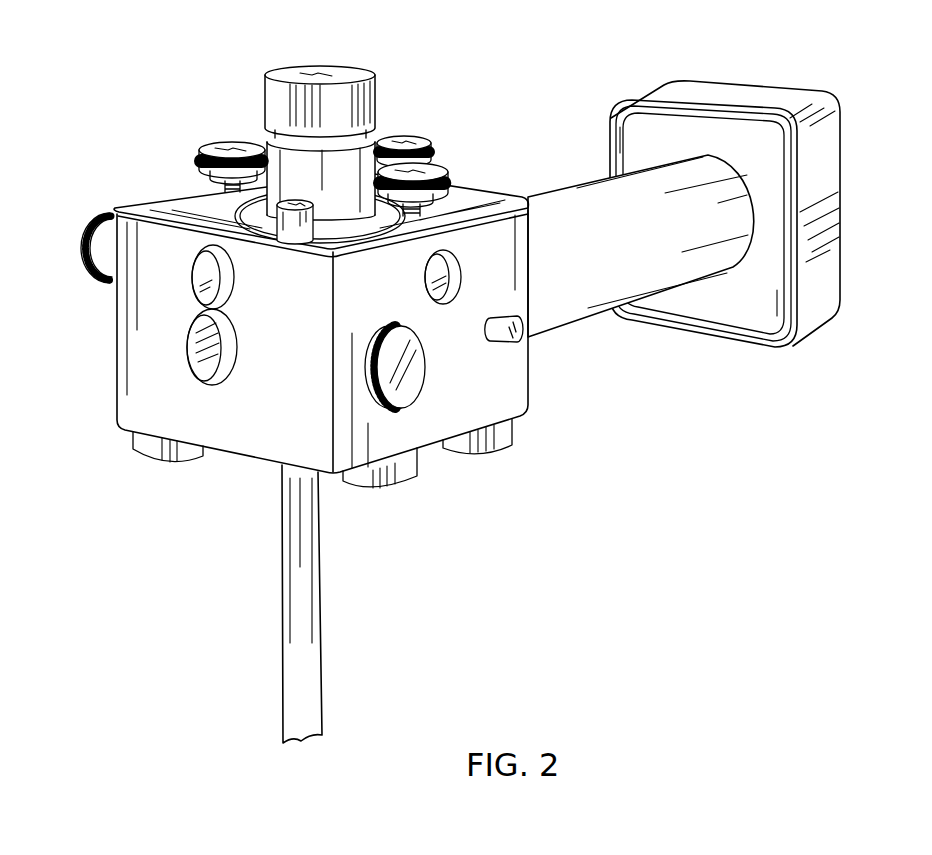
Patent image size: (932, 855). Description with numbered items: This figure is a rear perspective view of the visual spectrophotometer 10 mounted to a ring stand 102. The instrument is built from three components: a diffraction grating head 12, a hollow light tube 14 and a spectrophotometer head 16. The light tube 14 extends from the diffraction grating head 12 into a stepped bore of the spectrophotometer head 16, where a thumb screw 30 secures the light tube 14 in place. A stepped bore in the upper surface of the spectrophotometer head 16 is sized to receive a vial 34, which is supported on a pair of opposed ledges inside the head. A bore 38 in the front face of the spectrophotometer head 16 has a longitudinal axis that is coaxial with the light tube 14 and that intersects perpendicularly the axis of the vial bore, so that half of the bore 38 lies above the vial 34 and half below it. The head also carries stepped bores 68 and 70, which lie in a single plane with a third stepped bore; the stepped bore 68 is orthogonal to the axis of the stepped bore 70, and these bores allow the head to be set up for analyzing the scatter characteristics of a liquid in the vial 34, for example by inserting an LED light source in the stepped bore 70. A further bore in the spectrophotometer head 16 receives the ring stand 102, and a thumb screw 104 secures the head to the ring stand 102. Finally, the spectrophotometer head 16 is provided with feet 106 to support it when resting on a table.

The visual spectrophotometer 10 is at (473, 404).
The diffraction grating head 12 is at (846, 200).
The hollow light tube 14 is at (578, 180).
The spectrophotometer head 16 is at (282, 323).
The thumb screw 30 is at (430, 140).
The vial 34 is at (362, 142).
The bore 38 is at (193, 360).
The stepped bore 68 is at (203, 292).
The stepped bore 70 is at (453, 267).
The ring stand 102 is at (305, 618).
The thumb screw 104 is at (415, 380).
The feet 106 is at (162, 447).